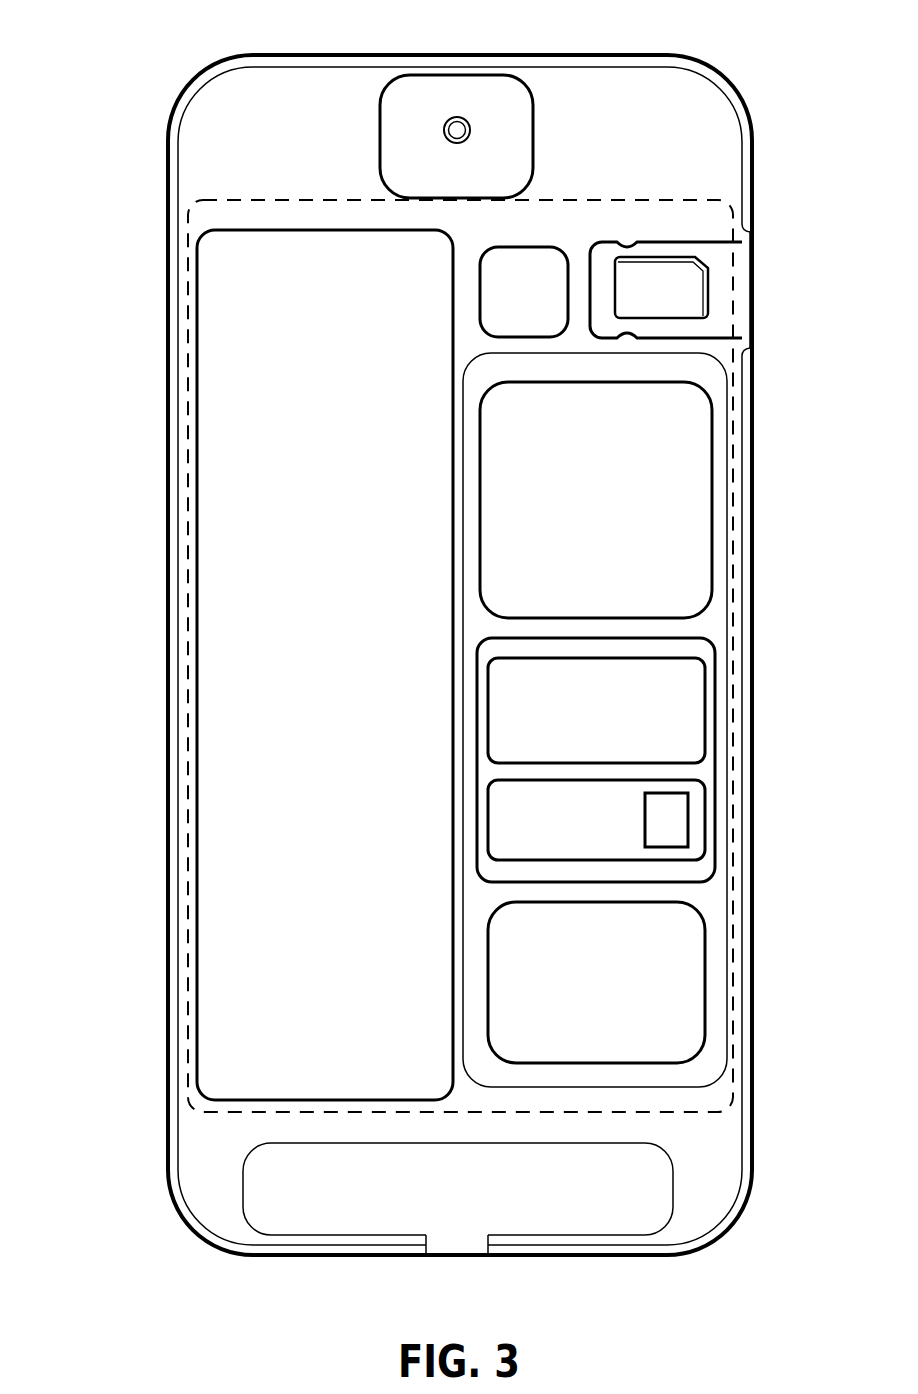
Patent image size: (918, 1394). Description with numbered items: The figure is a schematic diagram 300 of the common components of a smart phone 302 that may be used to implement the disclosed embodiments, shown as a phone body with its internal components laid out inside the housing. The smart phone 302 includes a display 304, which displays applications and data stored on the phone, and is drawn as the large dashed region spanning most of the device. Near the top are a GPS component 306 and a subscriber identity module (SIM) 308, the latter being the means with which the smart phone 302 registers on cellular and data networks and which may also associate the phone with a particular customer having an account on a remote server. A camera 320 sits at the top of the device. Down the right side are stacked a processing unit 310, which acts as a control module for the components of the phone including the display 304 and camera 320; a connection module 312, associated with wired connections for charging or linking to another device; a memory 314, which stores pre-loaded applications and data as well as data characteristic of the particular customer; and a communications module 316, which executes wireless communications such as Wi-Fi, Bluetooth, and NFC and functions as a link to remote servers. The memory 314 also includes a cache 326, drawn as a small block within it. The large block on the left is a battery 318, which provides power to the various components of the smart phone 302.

The schematic diagram 300 is at (97, 66).
The smart phone 302 is at (167, 266).
The display 304 is at (183, 382).
The GPS component 306 is at (551, 246).
The subscriber identity module (SIM) 308 is at (646, 240).
The processing unit 310 is at (618, 515).
The connection module 312 is at (618, 727).
The memory 314 is at (618, 835).
The communications module 316 is at (618, 997).
The battery 318 is at (348, 679).
The camera 320 is at (380, 114).
The cache 326 is at (690, 817).